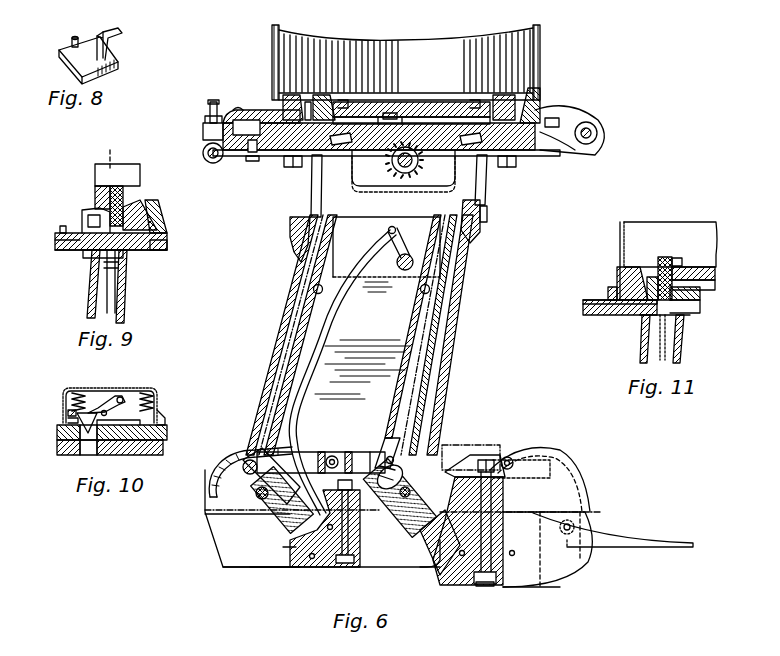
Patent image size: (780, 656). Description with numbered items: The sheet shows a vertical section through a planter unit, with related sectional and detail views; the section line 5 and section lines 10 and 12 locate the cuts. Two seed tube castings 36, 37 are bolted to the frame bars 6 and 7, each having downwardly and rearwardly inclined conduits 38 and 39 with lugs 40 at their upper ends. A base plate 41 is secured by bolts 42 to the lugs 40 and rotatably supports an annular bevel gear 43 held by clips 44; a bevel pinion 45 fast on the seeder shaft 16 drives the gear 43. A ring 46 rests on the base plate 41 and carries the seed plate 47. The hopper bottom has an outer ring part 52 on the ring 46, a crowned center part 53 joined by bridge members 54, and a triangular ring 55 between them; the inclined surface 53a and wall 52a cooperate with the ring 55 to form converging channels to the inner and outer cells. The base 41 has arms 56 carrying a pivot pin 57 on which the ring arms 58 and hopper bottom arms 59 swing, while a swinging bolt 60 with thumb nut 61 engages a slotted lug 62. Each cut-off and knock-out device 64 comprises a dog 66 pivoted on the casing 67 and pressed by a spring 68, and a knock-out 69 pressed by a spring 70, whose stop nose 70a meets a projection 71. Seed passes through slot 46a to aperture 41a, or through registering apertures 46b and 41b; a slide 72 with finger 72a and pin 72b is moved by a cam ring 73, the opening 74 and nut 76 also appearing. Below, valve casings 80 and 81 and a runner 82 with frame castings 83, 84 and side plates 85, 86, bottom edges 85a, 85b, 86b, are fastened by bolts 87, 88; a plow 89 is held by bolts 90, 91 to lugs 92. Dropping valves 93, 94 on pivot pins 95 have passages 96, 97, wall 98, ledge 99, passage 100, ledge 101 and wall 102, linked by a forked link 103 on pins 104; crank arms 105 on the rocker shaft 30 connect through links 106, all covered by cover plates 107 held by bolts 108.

In FIG. 6, the section line 5- 5 is at (270, 46).
In FIG. 6, the frame bar 6 is at (486, 216).
In FIG. 6, the frame bar 7 is at (290, 232).
In FIG. 9, the section line 10- 10 is at (110, 146).
In FIG. 6, the section line 12- 12 is at (270, 426).
In FIG. 6, the seeder shaft 16 is at (398, 170).
In FIG. 6, the check fork rocker shaft 30 is at (412, 258).
In FIG. 6, the seed tube casting 36 is at (288, 298).
In FIG. 6, the seed tube casting 37 is at (338, 215).
In FIG. 9, the rear conduit 38 is at (92, 300).
In FIG. 11, the rear conduit 38 is at (683, 350).
In FIG. 6, the rear conduit 38 is at (277, 343).
In FIG. 6, the front conduit 39 is at (435, 353).
In FIG. 11, the lug 40 is at (645, 318).
In FIG. 6, the lug 40 is at (268, 156).
In FIG. 9, the base plate 41 is at (170, 250).
In FIG. 10, the base plate 41 is at (58, 450).
In FIG. 11, the base plate 41 is at (585, 315).
In FIG. 6, the base plate 41 is at (234, 152).
In FIG. 9, the aperture 41a is at (125, 255).
In FIG. 10, the aperture 41a is at (82, 450).
In FIG. 11, the aperture 41b is at (680, 325).
In FIG. 6, the bolt 42 is at (288, 162).
In FIG. 9, the annular bevel gear 43 is at (168, 242).
In FIG. 11, the annular bevel gear 43 is at (702, 300).
In FIG. 6, the annular bevel gear 43 is at (343, 160).
In FIG. 6, the clip 44 is at (425, 118).
In FIG. 6, the bevel pinion 45 is at (416, 172).
In FIG. 10, the annular plate or ring 46 is at (58, 432).
In FIG. 11, the annular plate or ring 46 is at (610, 285).
In FIG. 6, the annular plate or ring 46 is at (265, 112).
In FIG. 9, the slot 46a is at (105, 262).
In FIG. 10, the slot 46a is at (90, 440).
In FIG. 11, the aperture 46b is at (685, 310).
In FIG. 6, the seed plate 47 is at (538, 95).
In FIG. 9, the outer ring part 52 is at (95, 190).
In FIG. 11, the outer ring part 52 is at (618, 275).
In FIG. 6, the outer ring part 52 is at (285, 115).
In FIG. 6, the inclined wall 52a is at (298, 100).
In FIG. 11, the center part 53 is at (712, 270).
In FIG. 6, the center part 53 is at (390, 100).
In FIG. 9, the outer inclined surface 53a is at (160, 204).
In FIG. 6, the outer inclined surface 53a is at (320, 100).
In FIG. 6, the bridge member 54 is at (350, 95).
In FIG. 9, the ring 55 is at (140, 210).
In FIG. 11, the ring 55 is at (652, 280).
In FIG. 6, the ring 55 is at (327, 100).
In FIG. 6, the arm 56 is at (585, 150).
In FIG. 6, the pivot pin 57 is at (598, 133).
In FIG. 6, the arm 58 is at (552, 118).
In FIG. 6, the arm 59 is at (592, 122).
In FIG. 6, the swinging bolt 60 is at (202, 155).
In FIG. 6, the thumb nut 61 is at (210, 104).
In FIG. 6, the slotted lug 62 is at (203, 128).
In FIG. 11, the cut-off and knock-out device 64 is at (680, 260).
In FIG. 10, the dog 66 is at (160, 415).
In FIG. 10, the inclosing casing 67 is at (118, 390).
In FIG. 10, the spring 68 is at (148, 393).
In FIG. 10, the knock-out device 69 is at (100, 400).
In FIG. 9, the spring 70 is at (118, 188).
In FIG. 10, the spring 70 is at (76, 393).
In FIG. 11, the spring 70 is at (666, 258).
In FIG. 10, the stop nose 70a is at (68, 400).
In FIG. 10, the projection 71 is at (68, 420).
In FIG. 8, the slide 72 is at (80, 70).
In FIG. 9, the slide 72 is at (75, 250).
In FIG. 8, the upstanding finger 72a is at (112, 32).
In FIG. 9, the upstanding finger 72a is at (83, 212).
In FIG. 8, the pin 72b is at (75, 41).
In FIG. 9, the pin 72b is at (62, 230).
In FIG. 11, the cam ring 73 is at (597, 298).
In FIG. 6, the cam ring 73 is at (240, 110).
In FIG. 6, the opening 74 is at (258, 160).
In FIG. 6, the nut 76 is at (252, 158).
In FIG. 6, the valve casing 80 is at (210, 480).
In FIG. 6, the valve casing 81 is at (476, 455).
In FIG. 6, the runner 82 is at (205, 520).
In FIG. 6, the frame casting 83 is at (470, 587).
In FIG. 6, the frame casting 84 is at (325, 567).
In FIG. 6, the side plate 85 is at (228, 552).
In FIG. 6, the bottom edge 85a is at (274, 570).
In FIG. 6, the bottom edge 85b is at (481, 588).
In FIG. 6, the side plate 86 is at (468, 290).
In FIG. 6, the bottom edge 86b is at (520, 590).
In FIG. 6, the bolt 87 is at (488, 585).
In FIG. 6, the bolt 88 is at (350, 567).
In FIG. 6, the sweep or plow 89 is at (616, 522).
In FIG. 6, the bolt 90 is at (508, 460).
In FIG. 6, the bolt 91 is at (573, 540).
In FIG. 6, the lug 92 is at (468, 445).
In FIG. 6, the dropping valve 93 is at (398, 520).
In FIG. 6, the dropping valve 94 is at (272, 507).
In FIG. 6, the pivot pin 95 is at (258, 488).
In FIG. 6, the seed passage 96 is at (425, 452).
In FIG. 6, the seed passage 97 is at (419, 530).
In FIG. 6, the cylindrical wall 98 is at (378, 452).
In FIG. 6, the seat or ledge 99 is at (430, 565).
In FIG. 6, the seed passage 100 is at (300, 520).
In FIG. 6, the seat or ledge 101 is at (285, 540).
In FIG. 6, the cylindrical wall 102 is at (213, 493).
In FIG. 6, the forked link 103 is at (332, 452).
In FIG. 6, the pin 104 is at (278, 450).
In FIG. 6, the crank arm 105 is at (396, 232).
In FIG. 6, the link 106 is at (375, 343).
In FIG. 6, the cover plate 107 is at (338, 285).
In FIG. 6, the bolt 108 is at (323, 296).